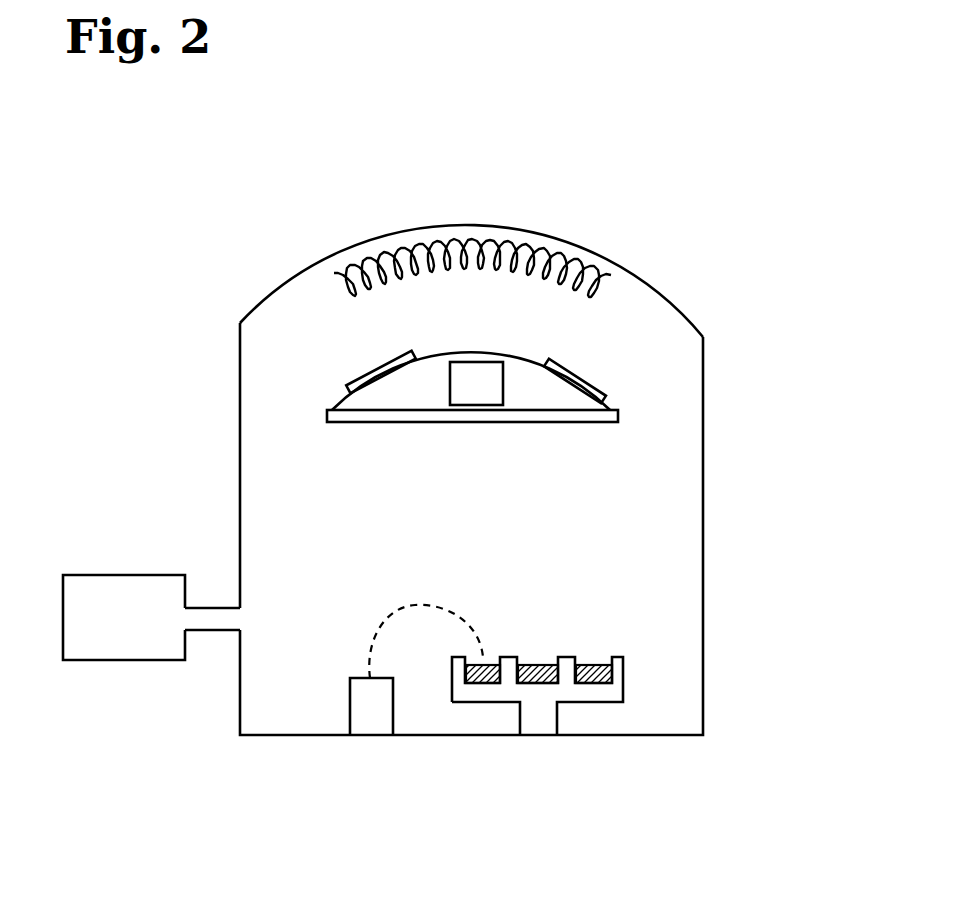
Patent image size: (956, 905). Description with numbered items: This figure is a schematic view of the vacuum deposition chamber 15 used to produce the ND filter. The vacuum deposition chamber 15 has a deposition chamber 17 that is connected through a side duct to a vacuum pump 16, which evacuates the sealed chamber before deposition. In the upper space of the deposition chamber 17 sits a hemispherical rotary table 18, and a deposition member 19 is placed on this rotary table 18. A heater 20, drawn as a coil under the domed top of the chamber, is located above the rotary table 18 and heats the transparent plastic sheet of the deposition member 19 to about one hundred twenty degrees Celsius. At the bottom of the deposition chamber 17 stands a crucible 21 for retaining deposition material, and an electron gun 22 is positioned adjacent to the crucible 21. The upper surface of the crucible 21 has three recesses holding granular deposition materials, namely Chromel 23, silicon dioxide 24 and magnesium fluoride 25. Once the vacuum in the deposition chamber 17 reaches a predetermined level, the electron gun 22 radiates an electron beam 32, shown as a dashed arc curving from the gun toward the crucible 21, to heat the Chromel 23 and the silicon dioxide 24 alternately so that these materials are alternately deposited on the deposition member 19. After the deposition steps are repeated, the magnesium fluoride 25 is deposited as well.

The vacuum deposition chamber 15 is at (556, 150).
The vacuum pump 16 is at (105, 583).
The deposition chamber 17 is at (242, 433).
The hemispherical rotary table 18 is at (342, 397).
The deposition member 19 is at (478, 370).
The heater 20 is at (390, 248).
The crucible 21 is at (587, 697).
The electron gun 22 is at (365, 723).
The Chromel 23 is at (487, 665).
The silicon dioxide 24 is at (538, 665).
The magnesium fluoride 25 is at (597, 665).
The electron beam 32 is at (410, 607).